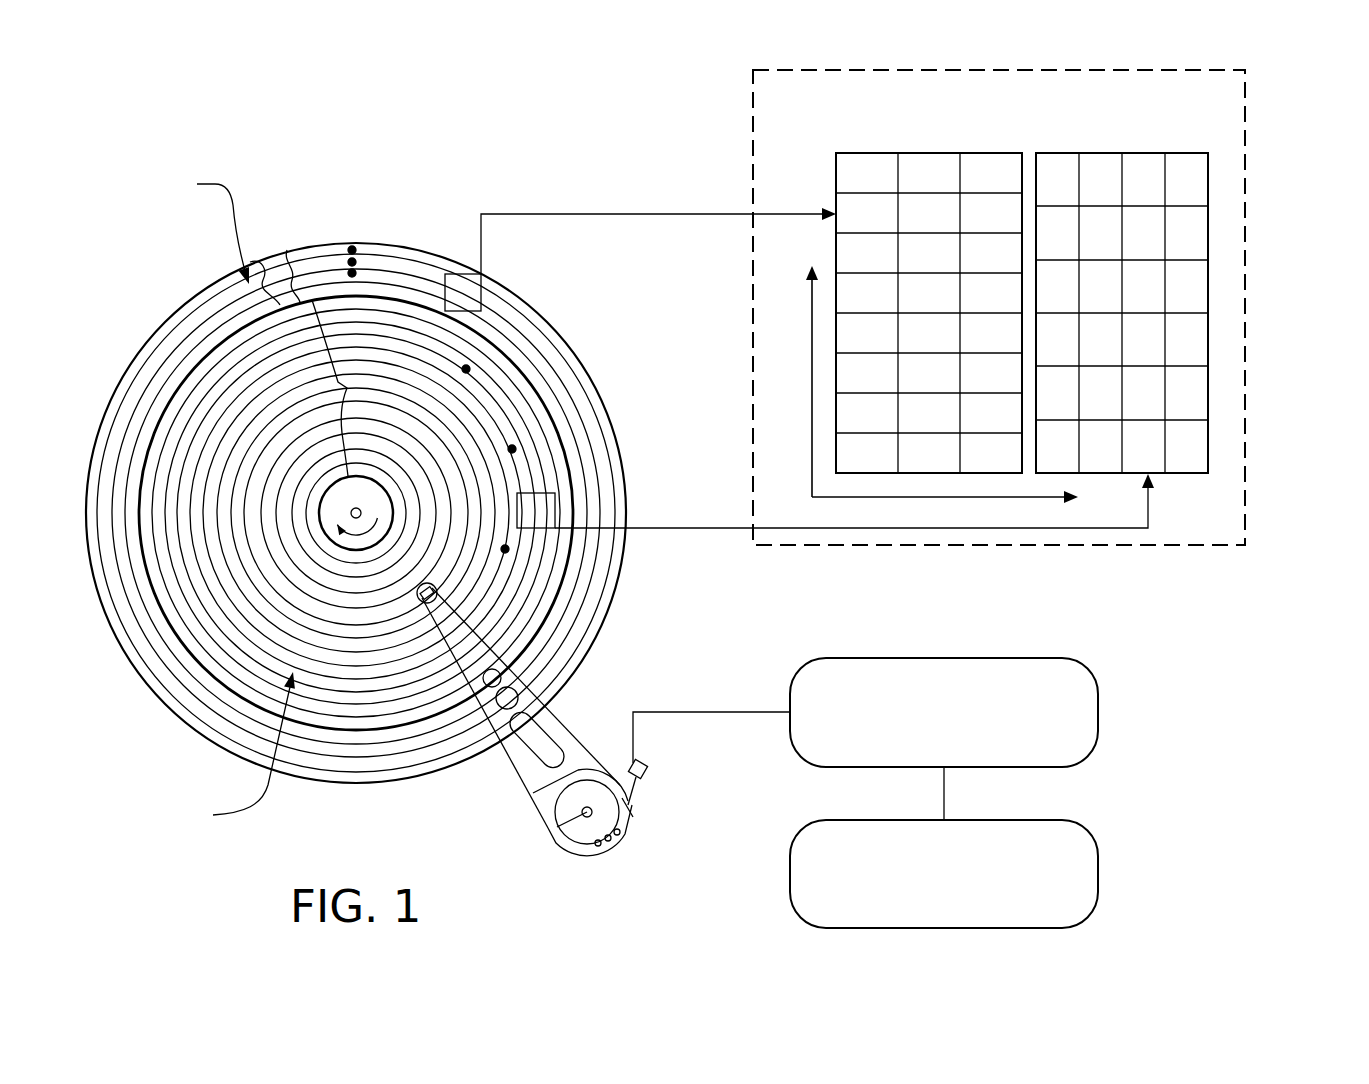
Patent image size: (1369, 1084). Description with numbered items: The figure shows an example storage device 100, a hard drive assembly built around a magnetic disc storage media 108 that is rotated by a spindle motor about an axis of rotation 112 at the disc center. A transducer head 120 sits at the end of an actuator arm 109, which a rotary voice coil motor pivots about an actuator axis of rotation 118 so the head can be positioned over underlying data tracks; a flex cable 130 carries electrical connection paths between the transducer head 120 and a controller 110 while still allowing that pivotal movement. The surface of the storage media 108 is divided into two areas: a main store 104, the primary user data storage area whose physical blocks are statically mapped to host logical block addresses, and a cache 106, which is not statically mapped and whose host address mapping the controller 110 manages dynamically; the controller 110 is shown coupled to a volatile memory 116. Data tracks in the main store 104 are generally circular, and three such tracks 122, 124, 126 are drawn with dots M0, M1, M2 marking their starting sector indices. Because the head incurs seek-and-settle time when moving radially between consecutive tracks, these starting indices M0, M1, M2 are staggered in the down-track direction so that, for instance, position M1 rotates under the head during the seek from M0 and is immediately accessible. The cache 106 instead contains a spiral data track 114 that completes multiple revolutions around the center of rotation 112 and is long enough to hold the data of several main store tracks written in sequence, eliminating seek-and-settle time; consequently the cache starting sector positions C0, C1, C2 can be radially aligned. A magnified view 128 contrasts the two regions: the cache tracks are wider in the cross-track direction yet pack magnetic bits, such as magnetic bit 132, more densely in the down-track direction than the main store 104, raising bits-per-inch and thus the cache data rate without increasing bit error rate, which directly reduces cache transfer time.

The storage device 100 is at (287, 92).
The main store 104 is at (347, 387).
The cache 106 is at (293, 275).
The storage media 108 is at (190, 727).
The actuator arm 109 is at (582, 737).
The controller 110 is at (965, 741).
The axis of rotation 112 is at (356, 508).
The spiral data track 114 is at (196, 313).
The volatile memory 116 is at (965, 901).
The actuator axis of rotation 118 is at (549, 828).
The transducer head 120 is at (480, 583).
The data track 122 is at (500, 567).
The data track 124 is at (515, 461).
The data track 126 is at (482, 382).
The magnified view 128 is at (1252, 200).
The flex cable 130 is at (633, 817).
The magnetic bit 132 is at (872, 172).
The starting sector position C0 is at (352, 273).
The starting sector position C1 is at (352, 262).
The starting sector position C2 is at (352, 250).
The starting sector index M0 is at (505, 549).
The starting sector index M1 is at (512, 449).
The starting sector index M2 is at (466, 369).